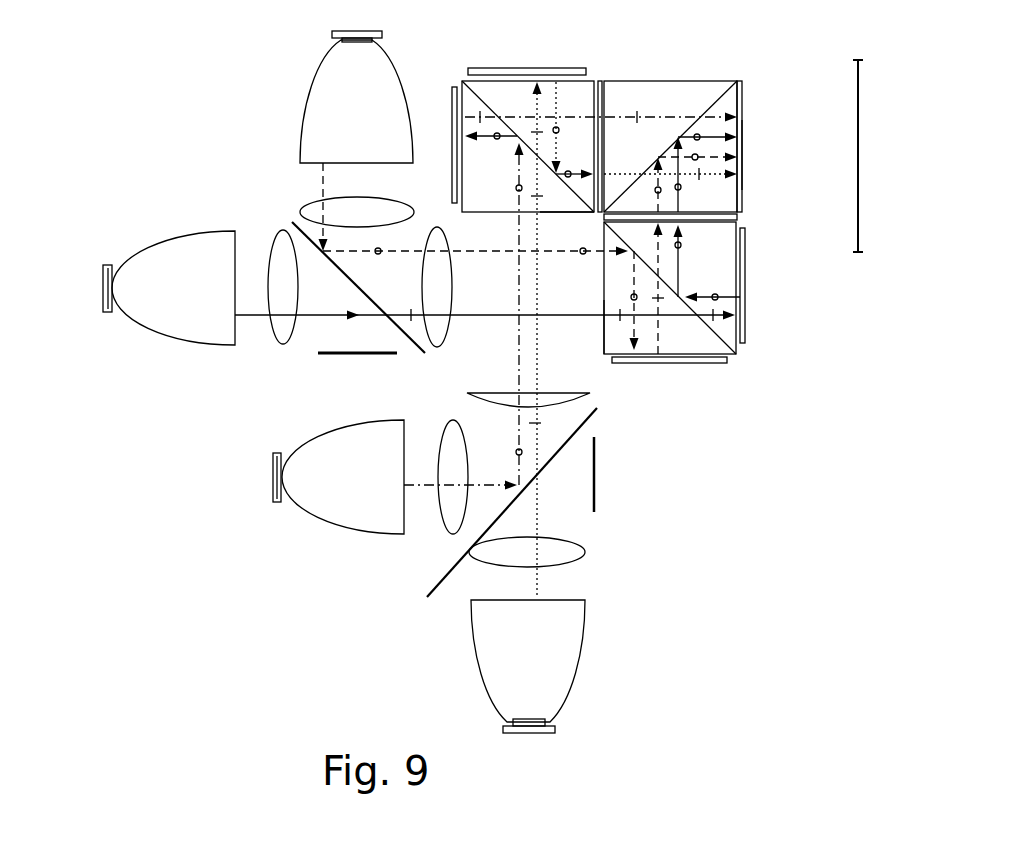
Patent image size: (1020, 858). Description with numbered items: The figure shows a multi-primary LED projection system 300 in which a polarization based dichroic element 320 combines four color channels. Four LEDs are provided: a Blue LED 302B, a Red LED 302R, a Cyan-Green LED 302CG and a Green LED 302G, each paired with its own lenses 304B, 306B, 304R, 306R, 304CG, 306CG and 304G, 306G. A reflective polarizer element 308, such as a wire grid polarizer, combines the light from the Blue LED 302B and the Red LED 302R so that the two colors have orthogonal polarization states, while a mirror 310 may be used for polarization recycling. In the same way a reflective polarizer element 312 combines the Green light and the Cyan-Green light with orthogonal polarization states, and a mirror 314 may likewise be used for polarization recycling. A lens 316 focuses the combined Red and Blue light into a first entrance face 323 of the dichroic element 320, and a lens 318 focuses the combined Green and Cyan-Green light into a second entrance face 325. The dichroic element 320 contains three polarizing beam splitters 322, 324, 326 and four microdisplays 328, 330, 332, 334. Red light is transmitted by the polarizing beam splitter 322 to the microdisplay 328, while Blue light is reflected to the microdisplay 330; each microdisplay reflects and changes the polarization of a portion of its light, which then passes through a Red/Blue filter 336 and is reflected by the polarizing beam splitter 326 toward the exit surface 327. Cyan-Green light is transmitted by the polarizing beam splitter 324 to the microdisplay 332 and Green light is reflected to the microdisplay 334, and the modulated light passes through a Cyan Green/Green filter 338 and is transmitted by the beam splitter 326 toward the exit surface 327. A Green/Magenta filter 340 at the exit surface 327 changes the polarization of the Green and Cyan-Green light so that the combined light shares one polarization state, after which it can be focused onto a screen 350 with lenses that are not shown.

The multi-primary LED projection system 300 is at (148, 45).
The Red LED 302R is at (103, 268).
The lens 304R is at (165, 338).
The lens 306R is at (276, 338).
The Green LED 302G is at (277, 502).
The lens 304G is at (328, 525).
The lens 306G is at (440, 518).
The Blue LED 302B is at (332, 35).
The lens 304B is at (312, 84).
The lens 306B is at (302, 207).
The Cyan-Green LED 302CG is at (545, 718).
The lens 304CG is at (574, 685).
The lens 306CG is at (588, 558).
The reflective polarizer element 308 is at (292, 223).
The mirror 310 is at (320, 353).
The reflective polarizer element 312 is at (427, 597).
The mirror 314 is at (595, 512).
The lens 316 is at (445, 258).
The lens 318 is at (467, 393).
The polarization based dichroic element 320 is at (716, 57).
The polarizing beam splitter 322 is at (737, 354).
The first entrance face 323 is at (600, 345).
The polarizing beam splitter 324 is at (462, 80).
The second entrance face 325 is at (567, 212).
The polarizing beam splitter 326 is at (683, 80).
The exit surface 327 is at (742, 155).
The microdisplay 328 is at (746, 300).
The microdisplay 330 is at (668, 363).
The microdisplay 332 is at (497, 68).
The microdisplay 334 is at (452, 190).
The Red/Blue filter 336 is at (742, 218).
The Cyan Green/Green filter 338 is at (600, 80).
The Green/Magenta filter 340 is at (742, 90).
The screen 350 is at (857, 218).